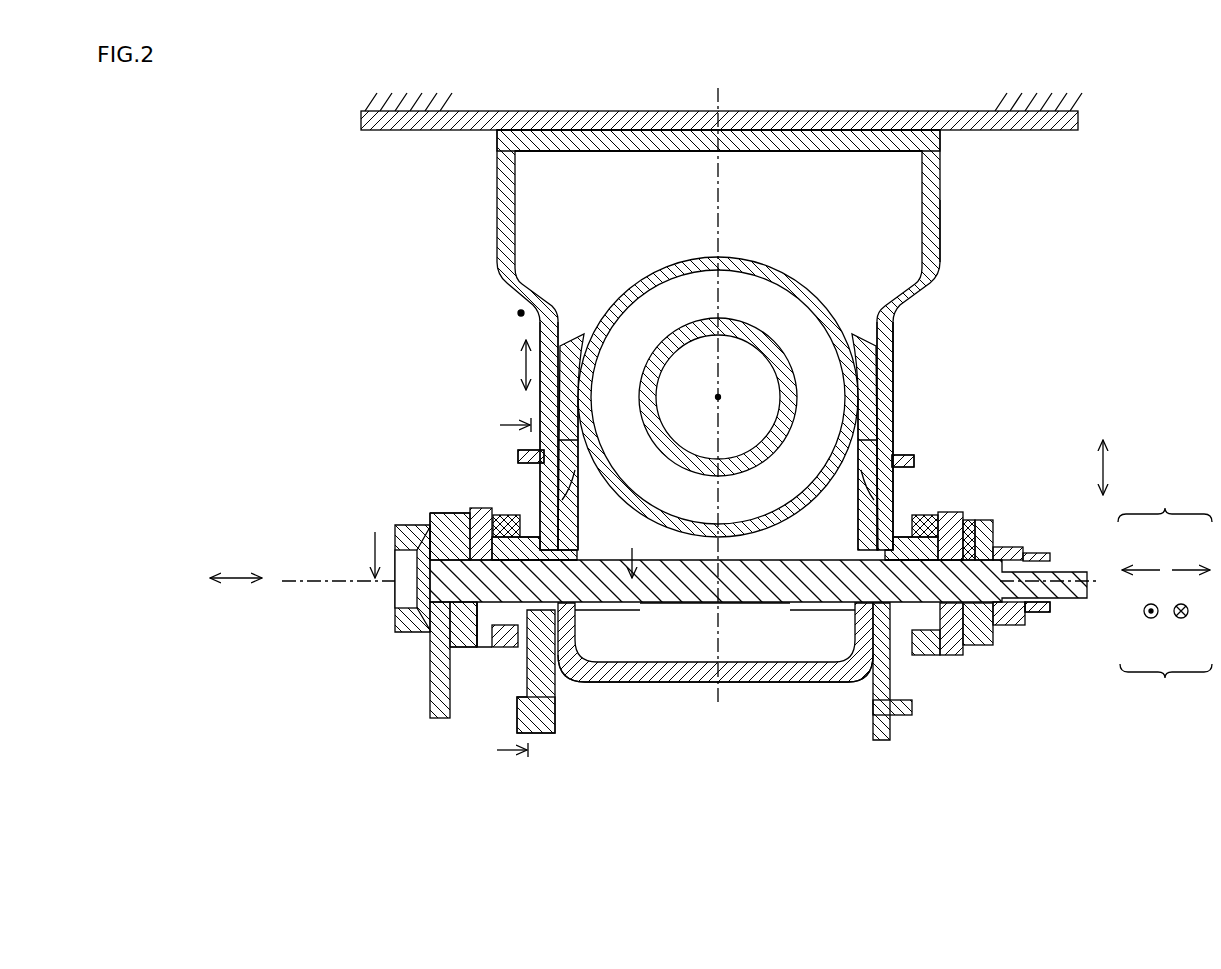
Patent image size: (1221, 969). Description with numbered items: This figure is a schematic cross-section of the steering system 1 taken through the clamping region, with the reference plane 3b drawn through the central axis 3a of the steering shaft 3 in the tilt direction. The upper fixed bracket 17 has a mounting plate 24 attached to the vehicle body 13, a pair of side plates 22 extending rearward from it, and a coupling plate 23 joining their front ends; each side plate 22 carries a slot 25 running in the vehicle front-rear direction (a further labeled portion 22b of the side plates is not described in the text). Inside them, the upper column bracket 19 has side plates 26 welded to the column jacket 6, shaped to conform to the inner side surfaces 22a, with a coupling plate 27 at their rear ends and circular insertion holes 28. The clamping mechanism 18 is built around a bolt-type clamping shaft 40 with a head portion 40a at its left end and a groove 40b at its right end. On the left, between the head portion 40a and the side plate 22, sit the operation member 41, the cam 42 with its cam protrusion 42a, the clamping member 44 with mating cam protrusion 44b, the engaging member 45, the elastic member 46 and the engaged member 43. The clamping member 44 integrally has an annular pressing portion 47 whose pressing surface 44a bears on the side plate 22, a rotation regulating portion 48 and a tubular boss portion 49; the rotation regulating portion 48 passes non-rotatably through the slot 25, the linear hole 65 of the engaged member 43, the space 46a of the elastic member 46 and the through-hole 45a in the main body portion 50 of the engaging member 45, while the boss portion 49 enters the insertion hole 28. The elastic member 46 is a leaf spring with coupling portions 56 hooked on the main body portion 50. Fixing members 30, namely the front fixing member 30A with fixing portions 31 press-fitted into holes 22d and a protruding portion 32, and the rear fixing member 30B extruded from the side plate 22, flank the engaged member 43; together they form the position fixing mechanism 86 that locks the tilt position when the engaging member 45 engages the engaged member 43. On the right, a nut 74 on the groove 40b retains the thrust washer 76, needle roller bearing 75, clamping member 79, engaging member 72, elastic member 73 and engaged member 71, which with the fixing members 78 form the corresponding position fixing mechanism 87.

The steering system 1 is at (1048, 183).
The steering shaft 3 is at (728, 318).
The central axis 3a is at (716, 397).
The reference plane 3b is at (722, 98).
The column jacket 6 is at (735, 257).
The vehicle body 13 is at (428, 102).
The upper fixed bracket 17 is at (950, 200).
The clamping mechanism 18 is at (433, 504).
The upper column bracket 19 is at (732, 684).
The side plates 22 is at (497, 212).
The inner side surfaces 22a is at (566, 320).
The bottom corner 22b is at (562, 683).
The holes 22d is at (652, 462).
The coupling plate 23 is at (630, 151).
The mounting plate 24 is at (885, 112).
The slot 25 is at (630, 654).
The side plates 26 is at (572, 395).
The coupling plate 27 is at (770, 683).
The insertion holes 28 is at (630, 624).
The fixing members 30 is at (442, 441).
The front fixing member 30A is at (711, 443).
The rear fixing member 30B is at (555, 716).
The fixing portions 31 is at (566, 445).
The protruding portion 32 is at (546, 455).
The clamping shaft 40 is at (392, 617).
The head portion 40a is at (395, 600).
The groove 40b is at (1030, 560).
The operation member 41 is at (432, 715).
The cam 42 is at (455, 510).
The cam protrusion 42a is at (433, 516).
The engaged member 43 is at (549, 735).
The clamping member 44 is at (452, 660).
The pressing surface 44a is at (472, 647).
The cam protrusion 44b is at (430, 532).
The engaging member 45 is at (471, 656).
The through-hole 45a is at (450, 640).
The elastic member 46 is at (505, 650).
The space 46a is at (688, 644).
The pressing portion 47 is at (481, 508).
The rotation regulating portion 48 is at (540, 553).
The boss portion 49 is at (562, 558).
The main body portion 50 is at (506, 515).
The coupling portions 56 is at (545, 540).
The linear hole 65 is at (566, 490).
The engaged member 71 is at (891, 706).
The engaging member 72 is at (951, 657).
The elastic member 73 is at (926, 657).
The nut 74 is at (1005, 547).
The needle roller bearing 75 is at (968, 520).
The thrust washer 76 is at (985, 520).
The fixing members 78 is at (987, 446).
The clamping member 79 is at (976, 648).
The position fixing mechanism 86 is at (520, 452).
The position fixing mechanism 87 is at (912, 458).